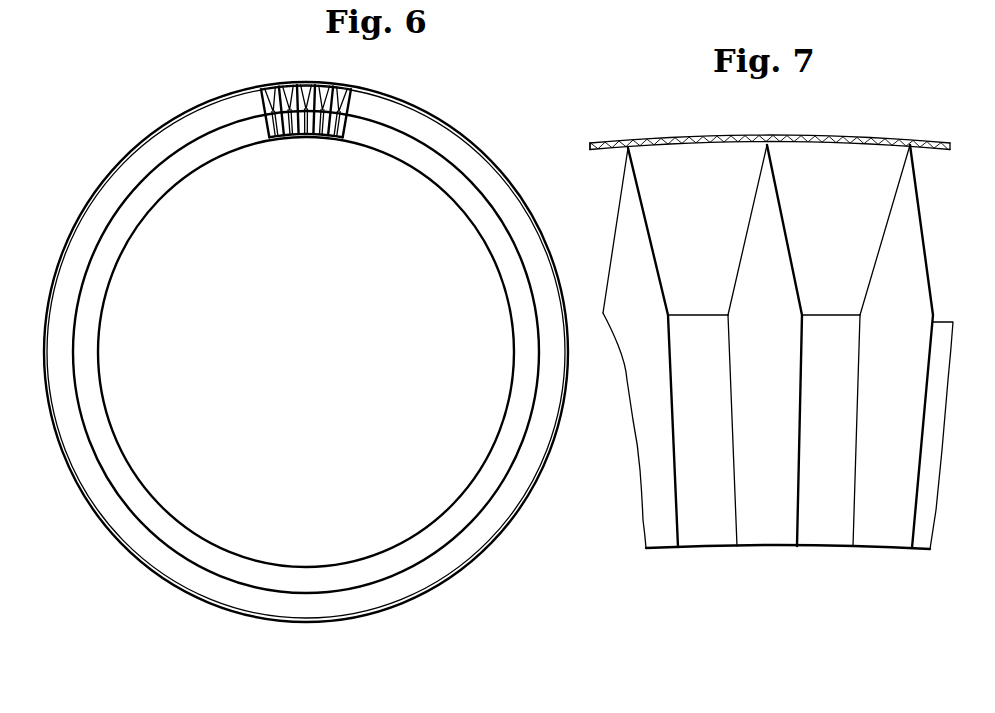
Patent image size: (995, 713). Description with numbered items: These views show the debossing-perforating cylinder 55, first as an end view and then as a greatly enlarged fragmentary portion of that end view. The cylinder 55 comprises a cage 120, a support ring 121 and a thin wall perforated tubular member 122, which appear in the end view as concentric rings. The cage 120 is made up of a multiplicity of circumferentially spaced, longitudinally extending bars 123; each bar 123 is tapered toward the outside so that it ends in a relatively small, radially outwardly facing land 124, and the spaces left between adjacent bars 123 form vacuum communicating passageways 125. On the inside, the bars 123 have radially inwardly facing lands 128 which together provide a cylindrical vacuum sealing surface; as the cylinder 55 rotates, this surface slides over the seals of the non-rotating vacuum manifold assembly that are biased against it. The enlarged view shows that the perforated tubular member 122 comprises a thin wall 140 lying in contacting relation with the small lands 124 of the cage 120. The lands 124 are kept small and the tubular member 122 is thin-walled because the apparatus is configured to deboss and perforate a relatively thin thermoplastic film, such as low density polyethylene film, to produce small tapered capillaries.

In FIG. 6, the debossing-perforating cylinder 55 is at (150, 118).
In FIG. 7, the debossing-perforating cylinder 55 is at (640, 518).
In FIG. 6, the cage 120 is at (124, 214).
In FIG. 6, the support ring 121 is at (114, 197).
In FIG. 6, the thin wall perforated tubular member 122 is at (355, 90).
In FIG. 7, the thin wall perforated tubular member 122 is at (740, 123).
In FIG. 6, the bars 123 is at (294, 134).
In FIG. 7, the bars 123 is at (652, 317).
In FIG. 6, the radially outwardly facing lands 124 is at (296, 86).
In FIG. 7, the radially outwardly facing lands 124 is at (628, 147).
In FIG. 6, the vacuum communicating passageways 125 is at (280, 88).
In FIG. 7, the vacuum communicating passageways 125 is at (700, 383).
In FIG. 6, the radially inwardly facing lands 128 is at (275, 136).
In FIG. 7, the radially inwardly facing lands 128 is at (665, 550).
In FIG. 7, the thin wall 140 is at (600, 146).